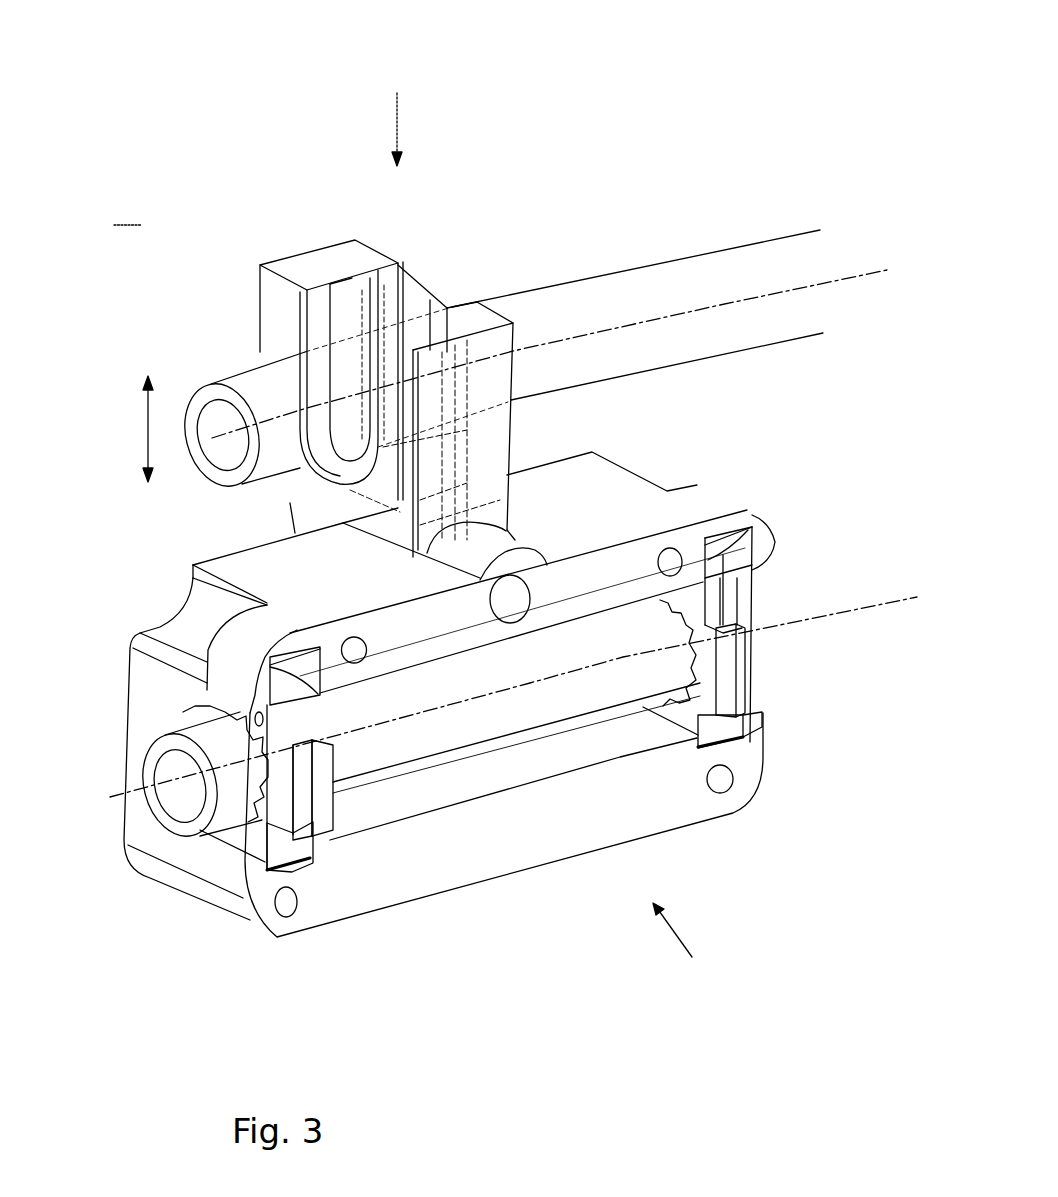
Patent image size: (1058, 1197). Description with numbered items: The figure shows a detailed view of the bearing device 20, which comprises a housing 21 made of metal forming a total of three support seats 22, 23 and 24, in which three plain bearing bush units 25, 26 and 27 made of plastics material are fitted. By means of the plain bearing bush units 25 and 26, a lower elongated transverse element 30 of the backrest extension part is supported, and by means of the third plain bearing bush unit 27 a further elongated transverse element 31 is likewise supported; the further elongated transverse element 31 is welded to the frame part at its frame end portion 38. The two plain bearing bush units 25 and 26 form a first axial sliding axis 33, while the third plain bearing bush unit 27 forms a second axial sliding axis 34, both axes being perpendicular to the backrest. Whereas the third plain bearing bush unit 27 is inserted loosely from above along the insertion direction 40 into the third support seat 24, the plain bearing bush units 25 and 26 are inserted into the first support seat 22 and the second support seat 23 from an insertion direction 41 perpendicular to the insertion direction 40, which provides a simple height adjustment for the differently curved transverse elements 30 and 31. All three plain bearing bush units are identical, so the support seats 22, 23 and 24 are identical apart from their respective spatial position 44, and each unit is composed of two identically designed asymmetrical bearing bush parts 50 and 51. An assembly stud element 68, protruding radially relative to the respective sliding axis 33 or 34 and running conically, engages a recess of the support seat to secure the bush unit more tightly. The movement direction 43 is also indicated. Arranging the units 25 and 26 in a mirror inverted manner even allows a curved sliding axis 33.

The bearing device 20 is at (657, 97).
The housing 21 is at (410, 887).
The first support seat 22 is at (272, 882).
The second support seat 23 is at (743, 747).
The third support seat 24 is at (265, 298).
The plain bearing bush unit 25 is at (240, 850).
The plain bearing bush unit 26 is at (752, 681).
The third plain bearing bush unit 27 is at (427, 294).
The lower elongated transverse element 30 is at (823, 561).
The further elongated transverse element 31 is at (713, 258).
The first axial sliding axis 33 is at (893, 600).
The second axial sliding axis 34 is at (878, 272).
The frame end portion 38 is at (209, 392).
The insertion direction 40 is at (397, 119).
The insertion direction 41 is at (683, 937).
The direction of movement 43 is at (146, 428).
The spatial position 44 is at (130, 213).
The asymmetrical bearing bush part 50 is at (362, 272).
The asymmetrical bearing bush part 51 is at (407, 280).
The assembly stud element 68 is at (323, 815).